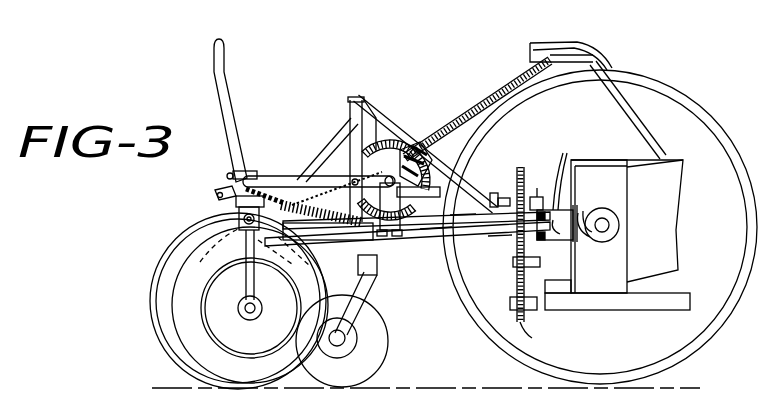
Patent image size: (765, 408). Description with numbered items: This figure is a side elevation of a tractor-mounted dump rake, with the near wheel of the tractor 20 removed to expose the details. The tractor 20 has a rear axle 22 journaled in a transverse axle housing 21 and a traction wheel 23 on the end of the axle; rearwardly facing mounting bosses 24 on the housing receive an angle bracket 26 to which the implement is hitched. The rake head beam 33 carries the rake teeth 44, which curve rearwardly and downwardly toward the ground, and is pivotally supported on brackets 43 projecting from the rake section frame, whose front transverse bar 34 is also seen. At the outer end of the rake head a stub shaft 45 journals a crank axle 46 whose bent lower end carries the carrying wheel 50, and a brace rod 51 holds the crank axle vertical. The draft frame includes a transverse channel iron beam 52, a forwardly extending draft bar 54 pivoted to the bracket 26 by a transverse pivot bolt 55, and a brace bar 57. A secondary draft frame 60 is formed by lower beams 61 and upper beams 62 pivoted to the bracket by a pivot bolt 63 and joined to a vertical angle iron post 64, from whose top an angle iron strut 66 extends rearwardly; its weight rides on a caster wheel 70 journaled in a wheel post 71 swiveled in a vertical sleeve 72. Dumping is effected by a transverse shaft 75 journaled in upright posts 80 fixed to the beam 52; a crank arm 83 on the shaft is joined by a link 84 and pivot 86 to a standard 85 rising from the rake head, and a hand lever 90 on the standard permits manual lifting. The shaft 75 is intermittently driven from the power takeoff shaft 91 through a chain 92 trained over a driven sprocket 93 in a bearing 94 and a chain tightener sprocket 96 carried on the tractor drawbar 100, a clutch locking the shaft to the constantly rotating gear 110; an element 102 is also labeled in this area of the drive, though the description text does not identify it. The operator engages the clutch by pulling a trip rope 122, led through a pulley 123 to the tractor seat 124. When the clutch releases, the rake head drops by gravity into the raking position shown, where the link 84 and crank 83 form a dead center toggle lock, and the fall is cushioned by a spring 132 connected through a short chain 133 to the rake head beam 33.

The tractor 20 is at (683, 200).
The transverse axle housing 21 is at (612, 224).
The rear axle 22 is at (612, 236).
The traction wheel 23 is at (683, 104).
The implement mounting boss 24 is at (587, 213).
The angle bracket 26 is at (557, 227).
The rake head beam 33 is at (237, 203).
The front transverse bar 34 is at (347, 236).
The bracket 43 is at (238, 240).
The rake tooth 44 is at (152, 278).
The stub shaft 45 is at (238, 226).
The crank axle 46 is at (245, 278).
The carrying wheel 50 is at (196, 336).
The brace rod 51 is at (278, 252).
The transverse channel iron beam 52 is at (388, 236).
The draft bar 54 is at (433, 236).
The transverse pivot bolt 55 is at (563, 170).
The brace bar 57 is at (463, 216).
The secondary draft frame 60 is at (391, 101).
The lower beam 61 is at (500, 238).
The upper beam 62 is at (392, 122).
The pivot bolt 63 is at (548, 224).
The angle iron post 64 is at (356, 136).
The angle iron strut 66 is at (333, 140).
The caster wheel 70 is at (372, 348).
The wheel post 71 is at (366, 295).
The vertical sleeve 72 is at (383, 262).
The transverse shaft 75 is at (404, 153).
The upright post 80 is at (392, 205).
The crank arm 83 is at (377, 125).
The link 84 is at (298, 175).
The standard 85 is at (228, 192).
The pivot 86 is at (231, 178).
The hand lever 90 is at (228, 117).
The power takeoff shaft 91 is at (517, 286).
The chain 92 is at (517, 305).
The driven sprocket 93 is at (515, 168).
The bearing 94 is at (546, 178).
The chain tightener sprocket 96 is at (522, 322).
The tractor drawbar 100 is at (594, 306).
The clamp 102 is at (498, 194).
The gear 110 is at (394, 140).
The trip rope 122 is at (480, 106).
The pulley 123 is at (284, 232).
The tractor seat 124 is at (556, 55).
The spring 132 is at (291, 205).
The chain 133 is at (258, 192).